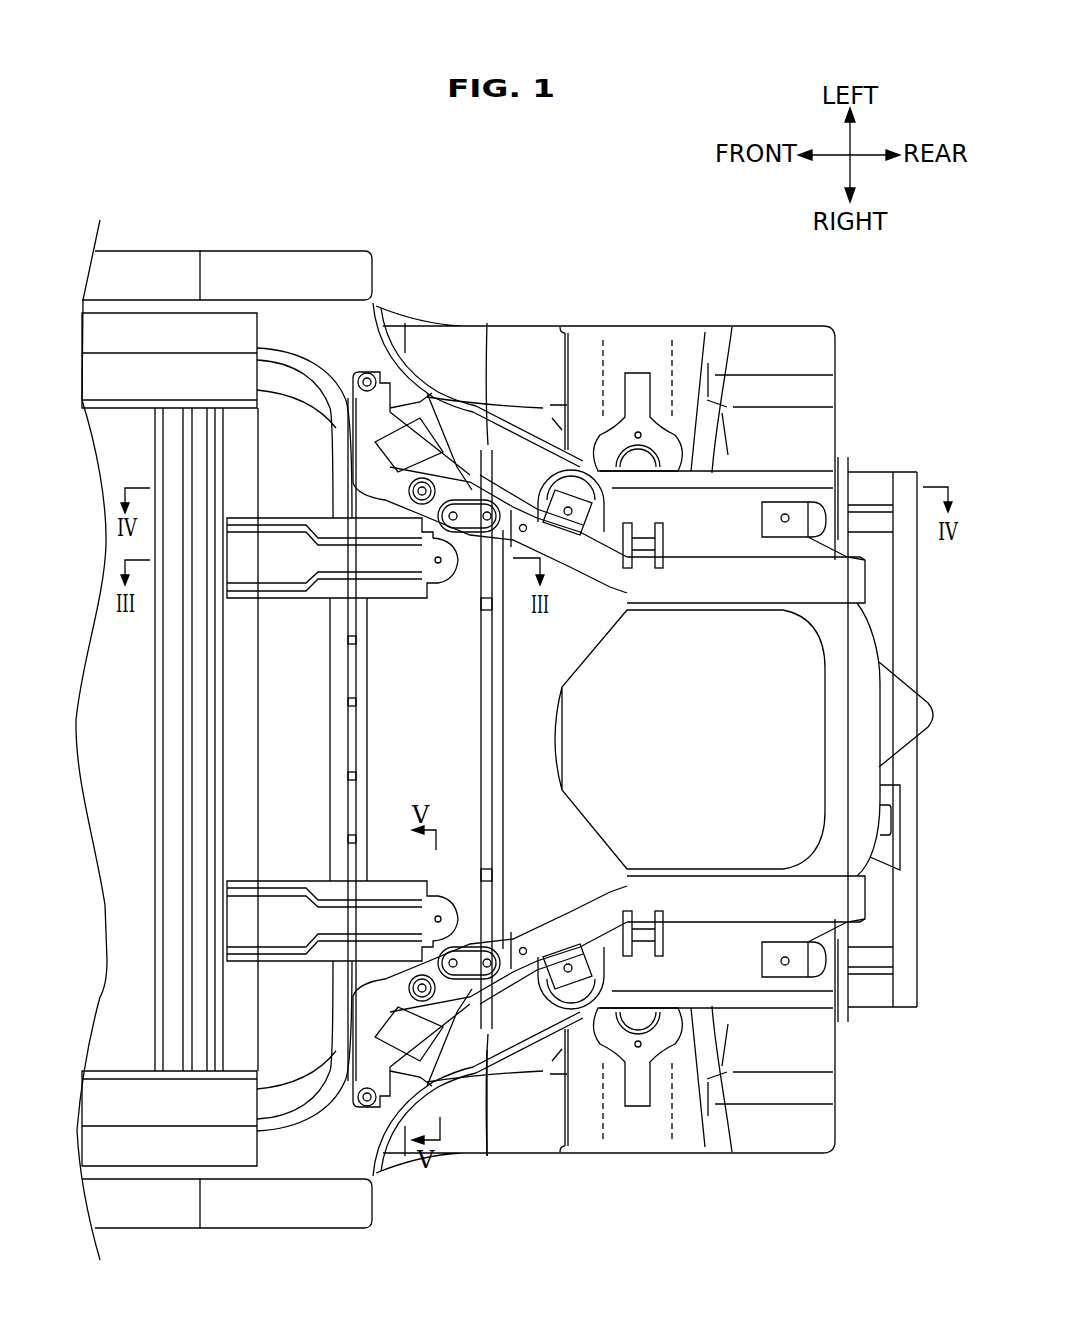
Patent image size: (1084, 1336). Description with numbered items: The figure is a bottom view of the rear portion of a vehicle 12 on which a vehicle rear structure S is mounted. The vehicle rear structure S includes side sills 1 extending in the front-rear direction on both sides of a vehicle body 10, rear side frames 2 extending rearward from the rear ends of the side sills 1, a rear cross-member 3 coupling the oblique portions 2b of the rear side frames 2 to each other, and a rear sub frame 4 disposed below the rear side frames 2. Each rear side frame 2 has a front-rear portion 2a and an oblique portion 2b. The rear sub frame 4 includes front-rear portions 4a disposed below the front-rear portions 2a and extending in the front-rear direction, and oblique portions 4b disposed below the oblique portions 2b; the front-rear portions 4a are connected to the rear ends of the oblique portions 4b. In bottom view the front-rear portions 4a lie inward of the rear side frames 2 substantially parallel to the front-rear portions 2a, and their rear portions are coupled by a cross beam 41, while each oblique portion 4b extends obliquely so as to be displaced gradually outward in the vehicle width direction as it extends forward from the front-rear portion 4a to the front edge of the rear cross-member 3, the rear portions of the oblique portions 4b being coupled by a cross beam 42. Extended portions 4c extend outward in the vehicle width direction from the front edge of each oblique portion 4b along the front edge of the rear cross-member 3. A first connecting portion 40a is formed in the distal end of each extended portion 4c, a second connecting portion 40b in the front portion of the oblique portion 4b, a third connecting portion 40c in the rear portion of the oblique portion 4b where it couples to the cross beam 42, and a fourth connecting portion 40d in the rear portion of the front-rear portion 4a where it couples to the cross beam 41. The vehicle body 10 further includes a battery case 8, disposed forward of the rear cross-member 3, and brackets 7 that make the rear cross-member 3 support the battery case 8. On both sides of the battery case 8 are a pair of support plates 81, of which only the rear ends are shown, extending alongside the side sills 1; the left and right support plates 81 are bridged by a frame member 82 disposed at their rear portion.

The side sill 1 is at (173, 261).
The vehicle 12 is at (341, 251).
The support plate 81 is at (93, 330).
The battery case 8 is at (123, 990).
The frame member 82 is at (173, 727).
The rear cross-member 3 is at (397, 728).
The extended portion 4c is at (362, 427).
The first connecting portion 40a is at (368, 372).
The vehicle rear structure S is at (751, 452).
The second connecting portion 40b is at (423, 478).
The oblique portion 4b is at (497, 540).
The bracket 7 is at (392, 582).
The rear side frame 2 is at (605, 739).
The front-rear portion 2a is at (732, 1170).
The oblique portion 2b is at (528, 1170).
The vehicle body 10 is at (490, 1157).
The third connecting portion 40c is at (571, 500).
The fourth connecting portion 40d is at (785, 517).
The rear sub frame 4 is at (673, 593).
The cross beam 42 is at (527, 737).
The cross beam 41 is at (838, 736).
The front-rear portion 4a is at (792, 580).